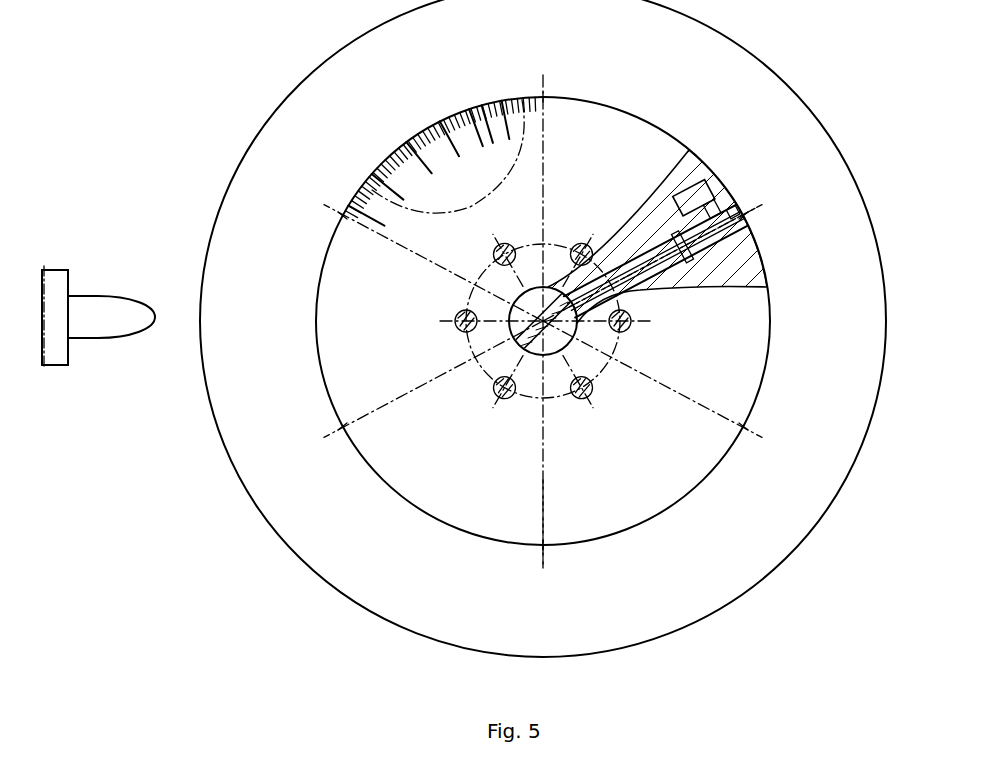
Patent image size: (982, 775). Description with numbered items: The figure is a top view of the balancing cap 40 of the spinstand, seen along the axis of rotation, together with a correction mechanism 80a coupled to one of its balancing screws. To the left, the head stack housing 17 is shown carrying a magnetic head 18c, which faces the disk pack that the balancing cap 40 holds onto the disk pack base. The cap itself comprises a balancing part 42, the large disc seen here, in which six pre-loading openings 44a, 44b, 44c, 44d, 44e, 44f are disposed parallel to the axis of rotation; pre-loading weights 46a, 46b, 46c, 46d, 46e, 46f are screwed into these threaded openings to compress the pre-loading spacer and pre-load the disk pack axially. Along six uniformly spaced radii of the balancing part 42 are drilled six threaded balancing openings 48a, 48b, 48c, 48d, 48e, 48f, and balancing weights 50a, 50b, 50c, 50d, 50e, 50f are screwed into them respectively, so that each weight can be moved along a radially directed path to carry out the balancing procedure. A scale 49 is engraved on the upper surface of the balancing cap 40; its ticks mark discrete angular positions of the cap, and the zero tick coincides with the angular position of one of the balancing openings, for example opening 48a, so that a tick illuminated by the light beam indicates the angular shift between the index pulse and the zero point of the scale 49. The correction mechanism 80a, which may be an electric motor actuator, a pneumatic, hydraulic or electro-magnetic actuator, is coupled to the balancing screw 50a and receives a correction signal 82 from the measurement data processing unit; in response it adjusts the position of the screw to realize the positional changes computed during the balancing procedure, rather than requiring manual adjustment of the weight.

The head stack housing 17 is at (53, 280).
The magnetic head 18c is at (88, 323).
The balancing cap 40 is at (543, 328).
The balancing part 42 is at (645, 470).
The pre-loading opening 44a is at (623, 328).
The pre-loading opening 44b is at (585, 395).
The pre-loading opening 44c is at (494, 392).
The pre-loading opening 44d is at (459, 326).
The pre-loading opening 44e is at (497, 250).
The pre-loading opening 44f is at (580, 246).
The pre-loading weight 46a is at (630, 323).
The pre-loading weight 46b is at (592, 390).
The pre-loading weight 46c is at (505, 398).
The pre-loading weight 46d is at (458, 315).
The pre-loading weight 46e is at (505, 244).
The pre-loading weight 46f is at (610, 228).
The balancing opening 48a is at (726, 220).
The balancing opening 48b is at (746, 426).
The balancing opening 48c is at (545, 545).
The balancing opening 48d is at (342, 426).
The balancing opening 48e is at (341, 214).
The balancing opening 48f is at (543, 97).
The scale 49 is at (412, 135).
The balancing weight 50a is at (668, 262).
The balancing weight 50b is at (745, 426).
The balancing weight 50c is at (545, 545).
The balancing weight 50d is at (342, 426).
The balancing weight 50e is at (341, 214).
The balancing weight 50f is at (545, 97).
The correction mechanism 80a is at (695, 175).
The correction signal 82 is at (654, 197).